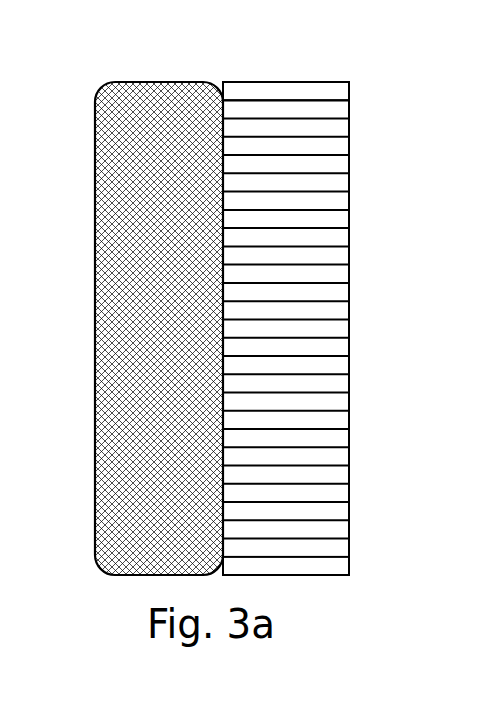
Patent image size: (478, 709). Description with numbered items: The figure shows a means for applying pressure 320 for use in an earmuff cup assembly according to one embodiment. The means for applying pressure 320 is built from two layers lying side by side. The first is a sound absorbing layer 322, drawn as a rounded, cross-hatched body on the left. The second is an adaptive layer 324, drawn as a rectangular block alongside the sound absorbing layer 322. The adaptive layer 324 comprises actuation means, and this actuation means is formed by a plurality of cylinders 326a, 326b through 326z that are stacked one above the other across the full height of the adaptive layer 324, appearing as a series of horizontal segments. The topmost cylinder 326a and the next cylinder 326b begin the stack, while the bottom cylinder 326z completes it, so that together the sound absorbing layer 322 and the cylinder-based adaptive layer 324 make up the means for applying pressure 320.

The means for applying pressure 320 is at (127, 66).
The sound absorbing layer 322 is at (118, 340).
The adaptive layer 324 is at (329, 79).
The cylinder 326a is at (350, 92).
The cylinder 326b is at (350, 112).
The cylinder 326z is at (335, 562).